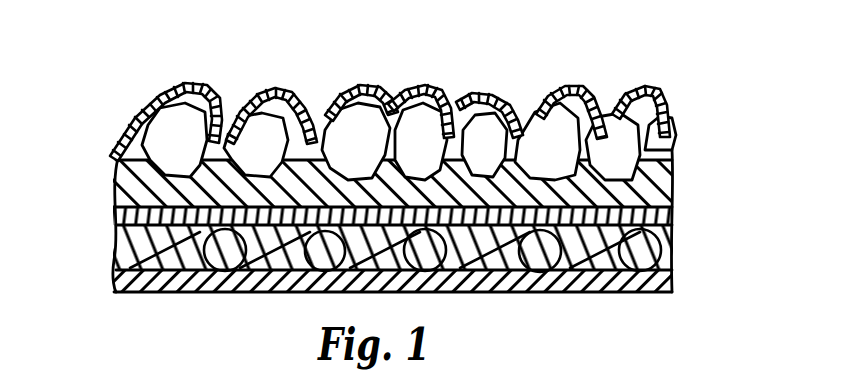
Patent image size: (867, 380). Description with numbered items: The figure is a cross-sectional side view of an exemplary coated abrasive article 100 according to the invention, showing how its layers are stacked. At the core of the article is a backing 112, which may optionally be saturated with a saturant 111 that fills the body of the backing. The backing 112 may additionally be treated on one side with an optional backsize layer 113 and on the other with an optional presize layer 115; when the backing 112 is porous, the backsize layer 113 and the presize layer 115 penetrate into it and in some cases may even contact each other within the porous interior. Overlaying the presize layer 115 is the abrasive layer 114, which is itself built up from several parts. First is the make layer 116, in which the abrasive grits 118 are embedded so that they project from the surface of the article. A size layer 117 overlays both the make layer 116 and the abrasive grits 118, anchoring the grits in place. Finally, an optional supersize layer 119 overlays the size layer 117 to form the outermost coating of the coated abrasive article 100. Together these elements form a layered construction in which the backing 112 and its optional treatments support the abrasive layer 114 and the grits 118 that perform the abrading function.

The coated abrasive article 100 is at (396, 151).
The saturant 111 is at (113, 264).
The backing 112 is at (675, 235).
The backsize layer 113 is at (672, 283).
The abrasive layer 114 is at (107, 150).
The presize layer 115 is at (116, 218).
The make layer 116 is at (672, 170).
The size layer 117 is at (556, 91).
The abrasive grits 118 is at (337, 136).
The supersize layer 119 is at (583, 87).